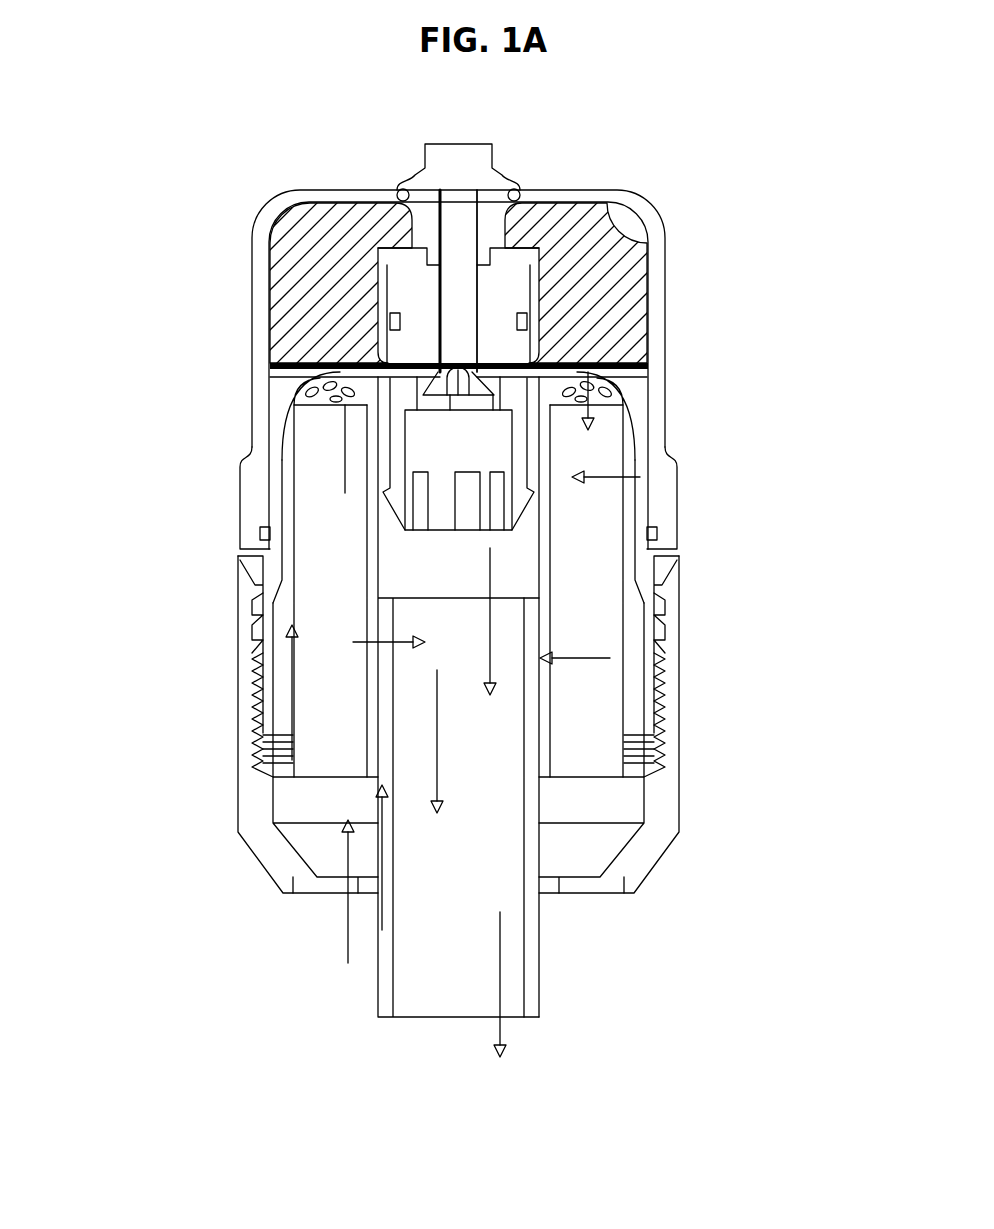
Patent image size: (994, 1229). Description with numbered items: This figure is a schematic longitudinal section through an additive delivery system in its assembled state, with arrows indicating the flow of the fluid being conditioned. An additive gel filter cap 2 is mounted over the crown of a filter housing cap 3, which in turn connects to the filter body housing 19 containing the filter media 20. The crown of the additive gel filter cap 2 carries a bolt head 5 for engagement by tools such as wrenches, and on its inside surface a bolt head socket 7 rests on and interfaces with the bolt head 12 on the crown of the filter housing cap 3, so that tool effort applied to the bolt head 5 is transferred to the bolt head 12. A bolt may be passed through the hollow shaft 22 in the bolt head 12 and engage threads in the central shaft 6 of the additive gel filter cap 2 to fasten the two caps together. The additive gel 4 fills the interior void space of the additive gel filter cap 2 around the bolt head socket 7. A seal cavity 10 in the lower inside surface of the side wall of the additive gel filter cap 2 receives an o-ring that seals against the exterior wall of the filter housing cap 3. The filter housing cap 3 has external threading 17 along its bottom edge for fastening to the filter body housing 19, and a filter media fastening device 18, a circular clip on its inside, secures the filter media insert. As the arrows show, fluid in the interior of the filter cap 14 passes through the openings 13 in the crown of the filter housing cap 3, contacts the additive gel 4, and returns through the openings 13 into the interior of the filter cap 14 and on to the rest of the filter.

The additive gel filter cap 2 is at (322, 180).
The bolt head 5 is at (450, 160).
The shaft 6 is at (458, 207).
The bolt head socket 7 is at (454, 330).
The hollow shaft 22 is at (508, 346).
The bolt head 12 is at (510, 258).
The additive gel 4 is at (318, 272).
The filter housing cap 3 is at (279, 404).
The openings 13 is at (555, 402).
The interior of the filter cap 14 is at (291, 466).
The filter media 20 is at (324, 529).
The seal cavity 10 is at (254, 527).
The filter body housing 19 is at (222, 676).
The external threading 17 is at (662, 686).
The filter media fastening device 18 is at (458, 453).